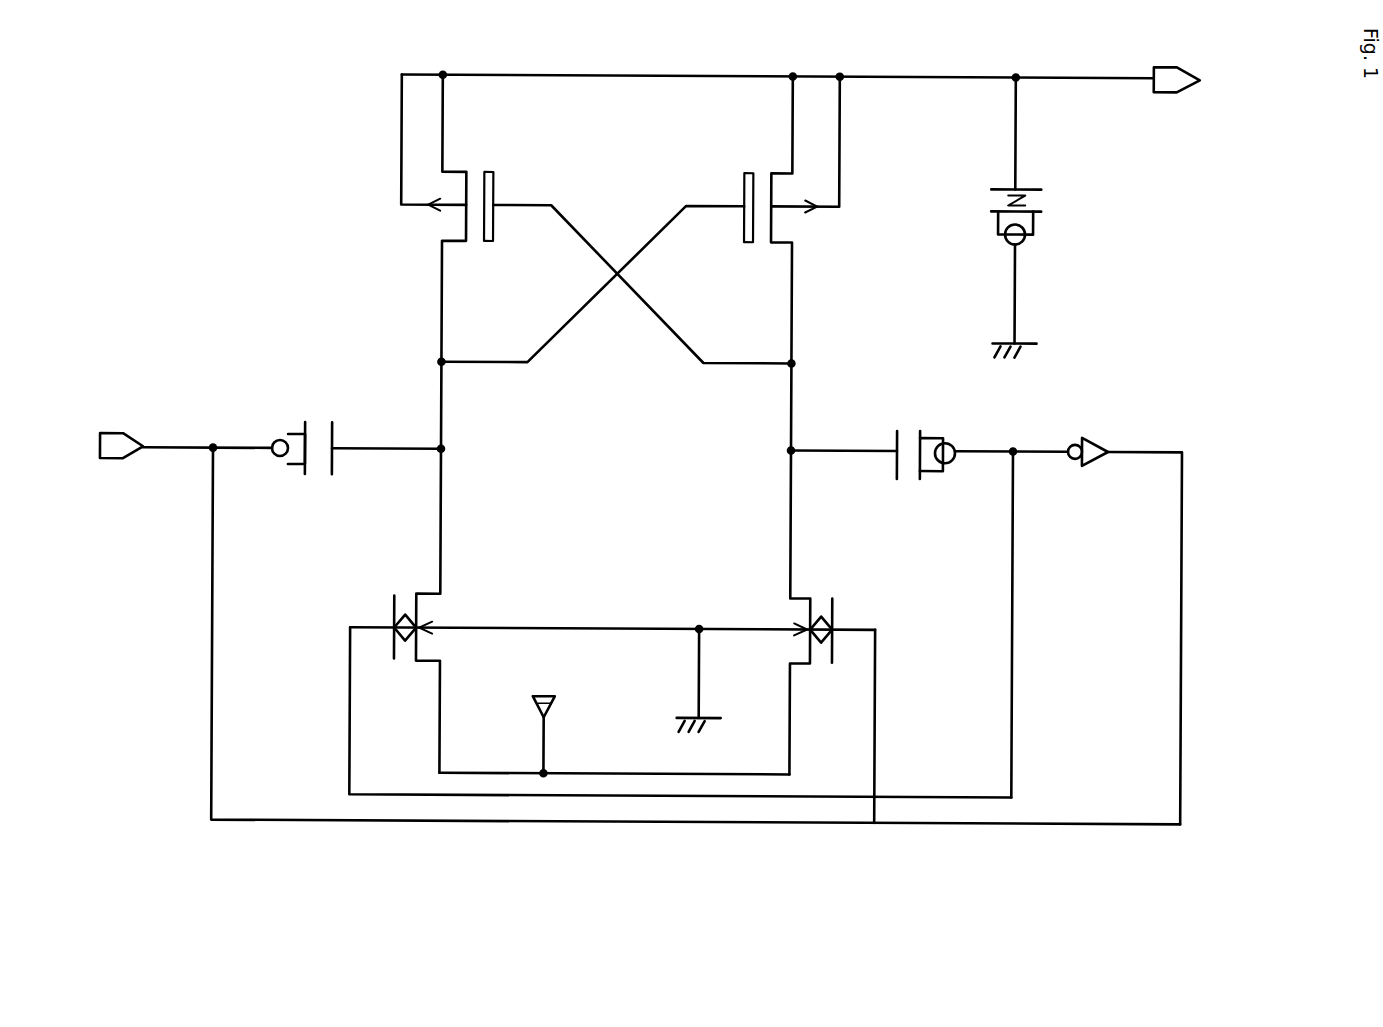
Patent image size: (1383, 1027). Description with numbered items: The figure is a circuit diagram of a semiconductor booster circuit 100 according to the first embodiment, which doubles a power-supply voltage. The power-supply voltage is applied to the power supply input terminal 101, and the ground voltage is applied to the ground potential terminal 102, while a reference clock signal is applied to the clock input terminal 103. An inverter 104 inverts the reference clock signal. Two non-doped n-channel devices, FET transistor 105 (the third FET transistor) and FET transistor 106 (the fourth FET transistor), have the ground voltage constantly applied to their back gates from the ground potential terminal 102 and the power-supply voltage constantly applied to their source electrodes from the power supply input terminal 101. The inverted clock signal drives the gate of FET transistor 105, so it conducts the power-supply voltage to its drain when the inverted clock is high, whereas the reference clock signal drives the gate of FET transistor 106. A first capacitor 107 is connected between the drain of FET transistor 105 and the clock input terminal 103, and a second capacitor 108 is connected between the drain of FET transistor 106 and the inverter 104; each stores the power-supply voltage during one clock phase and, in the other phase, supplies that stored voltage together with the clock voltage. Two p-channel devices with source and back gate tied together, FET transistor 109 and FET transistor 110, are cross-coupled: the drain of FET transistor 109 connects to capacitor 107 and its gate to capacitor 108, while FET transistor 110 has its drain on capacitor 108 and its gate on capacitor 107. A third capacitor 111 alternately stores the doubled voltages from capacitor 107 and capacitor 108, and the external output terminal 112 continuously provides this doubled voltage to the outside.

The semiconductor booster circuit 100 is at (996, 57).
The power supply input terminal 101 is at (532, 700).
The ground potential terminal 102 is at (703, 706).
The clock input terminal 103 is at (118, 462).
The inverter 104 is at (1105, 437).
The n-channel FET transistor 105 is at (406, 600).
The n-channel FET transistor 106 is at (820, 598).
The capacitor 107 is at (320, 422).
The capacitor 108 is at (897, 440).
The p-channel FET transistor 109 is at (428, 228).
The p-channel FET transistor 110 is at (800, 222).
The capacitor 111 is at (1042, 198).
The external output terminal 112 is at (1185, 92).